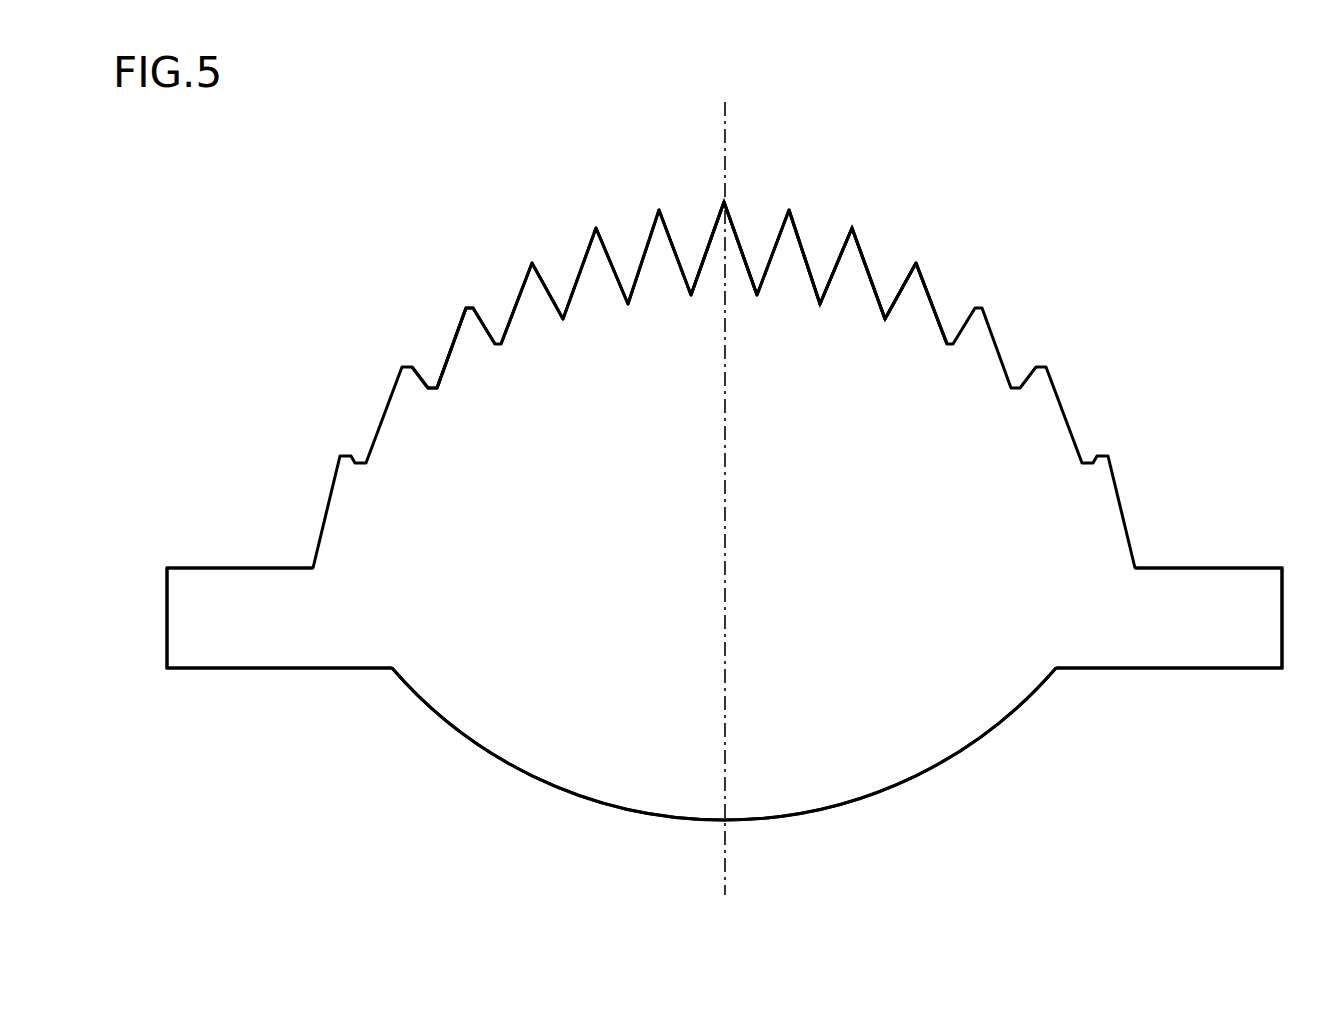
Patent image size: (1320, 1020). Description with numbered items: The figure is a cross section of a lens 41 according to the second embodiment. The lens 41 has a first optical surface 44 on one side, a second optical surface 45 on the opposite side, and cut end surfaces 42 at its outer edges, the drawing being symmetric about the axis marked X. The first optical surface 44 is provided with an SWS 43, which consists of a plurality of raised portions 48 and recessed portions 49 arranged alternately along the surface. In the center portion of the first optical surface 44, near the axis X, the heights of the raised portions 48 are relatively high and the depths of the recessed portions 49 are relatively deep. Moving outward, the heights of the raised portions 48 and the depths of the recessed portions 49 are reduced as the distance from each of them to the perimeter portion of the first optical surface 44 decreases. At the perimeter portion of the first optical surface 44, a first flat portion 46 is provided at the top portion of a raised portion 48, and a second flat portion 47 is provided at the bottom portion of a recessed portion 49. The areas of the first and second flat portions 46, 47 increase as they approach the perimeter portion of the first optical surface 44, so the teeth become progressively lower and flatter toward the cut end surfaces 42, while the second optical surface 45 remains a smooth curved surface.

The lens 41 is at (1210, 187).
The cut end surfaces 42 is at (1218, 568).
The SWS 43 is at (582, 242).
The first optical surface 44 is at (927, 285).
The second optical surface 45 is at (860, 800).
The first flat portion 46 is at (473, 308).
The second flat portion 47 is at (435, 388).
The raised portions 48 is at (778, 235).
The recessed portions 49 is at (887, 280).
The optical axis X is at (725, 122).